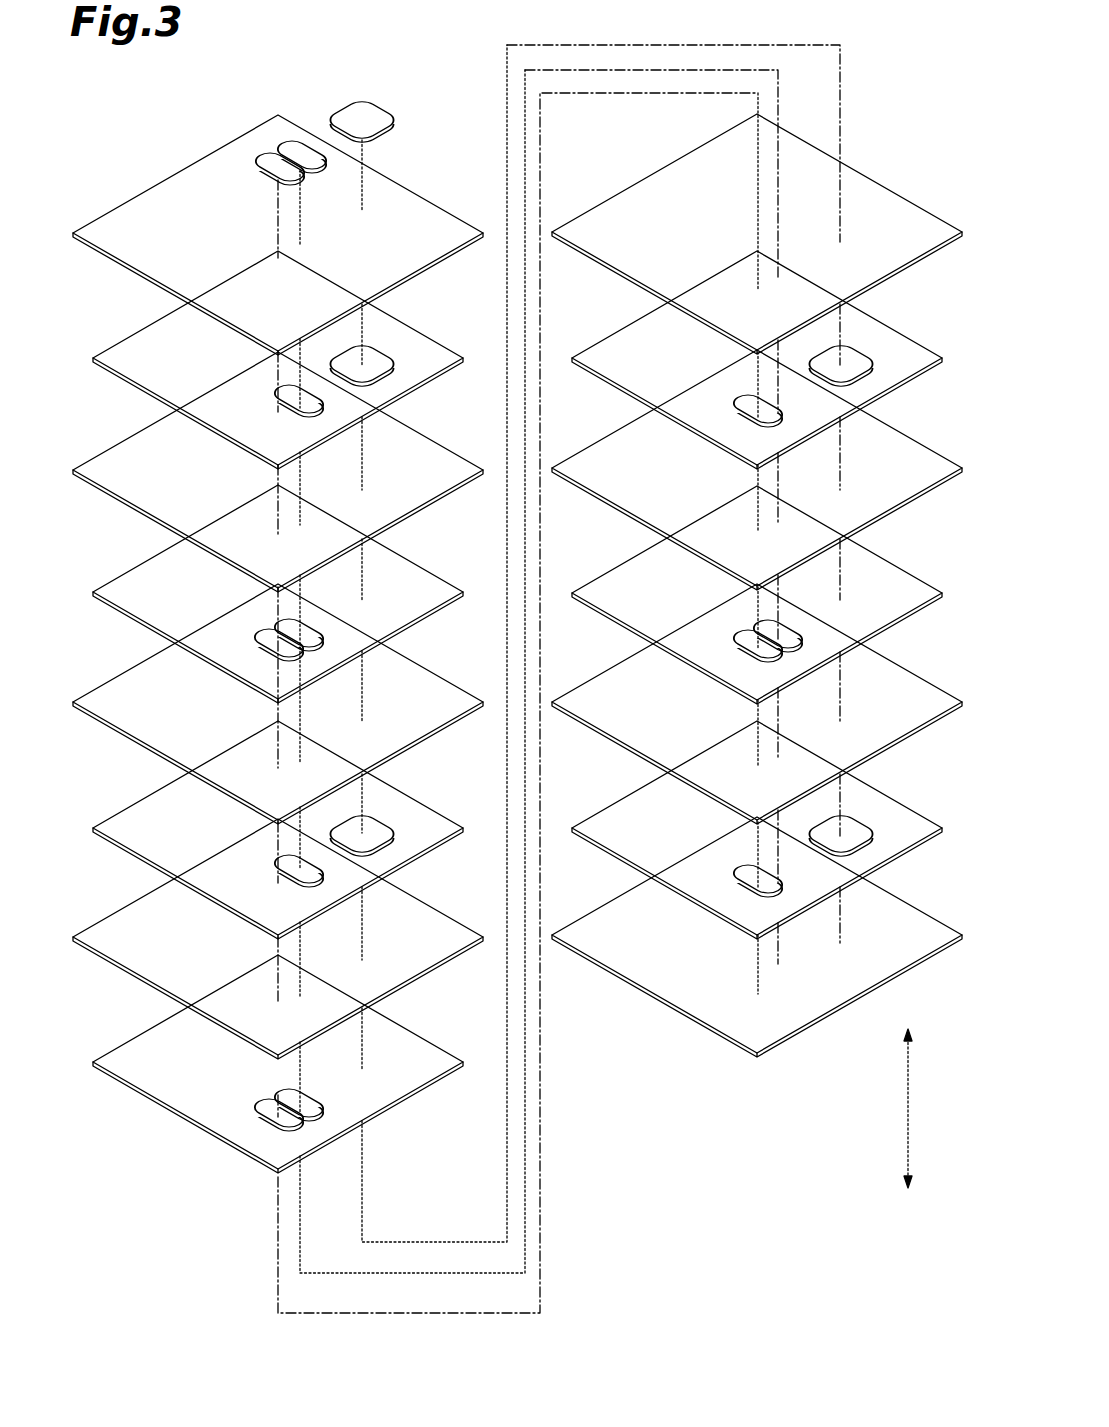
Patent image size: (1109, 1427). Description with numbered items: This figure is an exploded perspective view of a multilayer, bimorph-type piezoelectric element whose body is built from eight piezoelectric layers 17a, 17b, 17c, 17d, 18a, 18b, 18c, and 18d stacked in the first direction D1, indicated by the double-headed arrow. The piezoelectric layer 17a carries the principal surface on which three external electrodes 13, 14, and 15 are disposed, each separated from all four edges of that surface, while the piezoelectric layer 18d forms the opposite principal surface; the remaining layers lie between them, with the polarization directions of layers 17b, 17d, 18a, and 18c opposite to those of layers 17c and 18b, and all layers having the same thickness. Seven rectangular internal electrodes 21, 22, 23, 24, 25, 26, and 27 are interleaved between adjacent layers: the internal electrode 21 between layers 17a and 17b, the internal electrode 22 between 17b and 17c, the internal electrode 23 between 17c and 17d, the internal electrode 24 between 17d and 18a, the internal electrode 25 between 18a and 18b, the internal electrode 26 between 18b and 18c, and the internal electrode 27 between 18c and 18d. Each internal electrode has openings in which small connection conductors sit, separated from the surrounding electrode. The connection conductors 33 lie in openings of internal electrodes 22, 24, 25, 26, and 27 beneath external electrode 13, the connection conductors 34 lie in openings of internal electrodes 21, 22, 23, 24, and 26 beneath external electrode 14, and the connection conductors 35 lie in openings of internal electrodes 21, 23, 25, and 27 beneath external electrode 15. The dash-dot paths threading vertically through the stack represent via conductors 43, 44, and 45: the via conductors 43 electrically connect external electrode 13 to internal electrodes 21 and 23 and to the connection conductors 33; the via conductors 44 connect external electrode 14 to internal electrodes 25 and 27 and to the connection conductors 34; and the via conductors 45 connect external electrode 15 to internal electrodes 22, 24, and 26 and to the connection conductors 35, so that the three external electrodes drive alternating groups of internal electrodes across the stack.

The external electrode 13 is at (265, 158).
The external electrode 14 is at (300, 150).
The external electrode 15 is at (353, 123).
The piezoelectric layer 17a is at (430, 218).
The piezoelectric layer 17b is at (440, 460).
The piezoelectric layer 17c is at (440, 690).
The piezoelectric layer 17d is at (440, 927).
The piezoelectric layer 18a is at (902, 218).
The piezoelectric layer 18b is at (920, 458).
The piezoelectric layer 18c is at (920, 690).
The piezoelectric layer 18d is at (919, 927).
The internal electrode 21 is at (157, 385).
The internal electrode 22 is at (437, 580).
The internal electrode 23 is at (153, 853).
The internal electrode 24 is at (437, 1058).
The internal electrode 25 is at (643, 385).
The internal electrode 26 is at (907, 578).
The internal electrode 27 is at (603, 820).
The connection conductor 33 is at (260, 642).
The connection conductor 34 is at (282, 387).
The connection conductor 35 is at (370, 362).
The via conductor 43 is at (503, 92).
The via conductor 44 is at (603, 72).
The via conductor 45 is at (842, 130).
The first direction D1 is at (908, 1105).